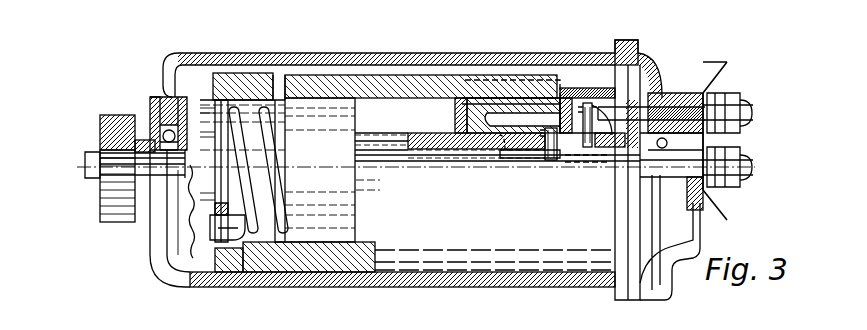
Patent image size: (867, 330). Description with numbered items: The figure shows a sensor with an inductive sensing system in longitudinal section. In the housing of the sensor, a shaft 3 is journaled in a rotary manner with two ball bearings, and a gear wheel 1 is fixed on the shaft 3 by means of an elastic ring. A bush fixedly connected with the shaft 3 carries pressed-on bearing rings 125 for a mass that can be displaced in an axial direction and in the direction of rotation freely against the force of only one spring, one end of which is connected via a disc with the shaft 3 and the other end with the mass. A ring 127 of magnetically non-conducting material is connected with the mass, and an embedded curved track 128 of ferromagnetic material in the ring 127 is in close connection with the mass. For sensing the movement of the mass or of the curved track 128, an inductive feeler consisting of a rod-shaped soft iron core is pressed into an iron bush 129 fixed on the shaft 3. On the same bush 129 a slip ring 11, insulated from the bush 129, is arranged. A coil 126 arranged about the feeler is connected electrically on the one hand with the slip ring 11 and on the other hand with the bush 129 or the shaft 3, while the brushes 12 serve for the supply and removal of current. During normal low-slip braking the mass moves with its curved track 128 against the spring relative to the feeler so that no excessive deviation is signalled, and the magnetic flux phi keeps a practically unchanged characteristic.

The gear wheel 1 is at (122, 114).
The shaft 3 is at (432, 162).
The slip ring 11 is at (636, 103).
The brushes 12 is at (668, 95).
The bearing rings 125 is at (460, 85).
The coil 126 is at (527, 80).
The ring 127 is at (562, 84).
The curved track 128 is at (588, 98).
The iron bush 129 is at (606, 170).
The magnetic flux phi is at (480, 160).